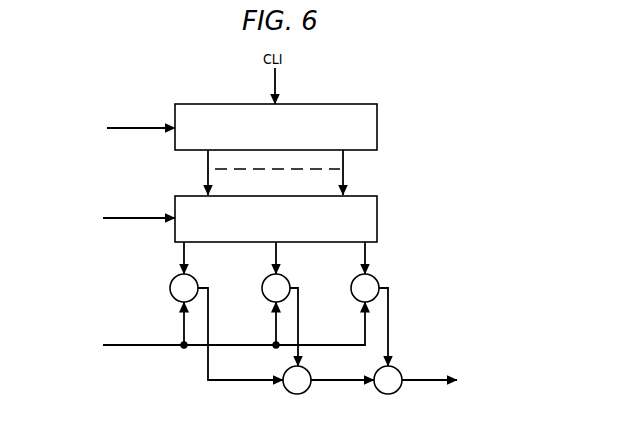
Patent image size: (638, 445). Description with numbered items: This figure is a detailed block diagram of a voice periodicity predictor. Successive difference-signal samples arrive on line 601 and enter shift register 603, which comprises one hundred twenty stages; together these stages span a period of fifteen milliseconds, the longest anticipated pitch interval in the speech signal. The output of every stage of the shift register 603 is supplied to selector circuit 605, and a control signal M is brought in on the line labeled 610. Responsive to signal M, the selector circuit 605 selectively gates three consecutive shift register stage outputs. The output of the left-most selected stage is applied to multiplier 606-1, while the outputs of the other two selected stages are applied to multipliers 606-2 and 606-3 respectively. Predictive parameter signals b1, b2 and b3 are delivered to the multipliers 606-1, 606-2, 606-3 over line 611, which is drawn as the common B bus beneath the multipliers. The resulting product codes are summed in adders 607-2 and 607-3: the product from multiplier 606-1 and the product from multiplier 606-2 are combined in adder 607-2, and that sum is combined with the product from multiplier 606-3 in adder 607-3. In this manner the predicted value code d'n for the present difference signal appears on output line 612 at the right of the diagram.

The line 601 is at (135, 129).
The shift register 603 is at (377, 118).
The selector circuit 605 is at (377, 218).
The M input line to selector 610 is at (136, 219).
The multiplier 606-1 is at (226, 311).
The multiplier 606-2 is at (293, 304).
The multiplier 606-3 is at (382, 304).
The line 611 is at (156, 346).
The adder 607-2 is at (328, 389).
The adder 607-3 is at (392, 389).
The line 612 is at (413, 380).